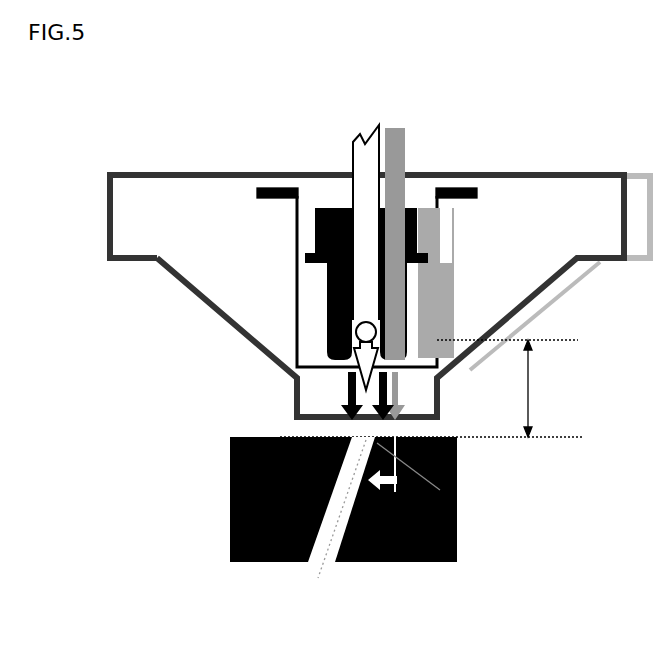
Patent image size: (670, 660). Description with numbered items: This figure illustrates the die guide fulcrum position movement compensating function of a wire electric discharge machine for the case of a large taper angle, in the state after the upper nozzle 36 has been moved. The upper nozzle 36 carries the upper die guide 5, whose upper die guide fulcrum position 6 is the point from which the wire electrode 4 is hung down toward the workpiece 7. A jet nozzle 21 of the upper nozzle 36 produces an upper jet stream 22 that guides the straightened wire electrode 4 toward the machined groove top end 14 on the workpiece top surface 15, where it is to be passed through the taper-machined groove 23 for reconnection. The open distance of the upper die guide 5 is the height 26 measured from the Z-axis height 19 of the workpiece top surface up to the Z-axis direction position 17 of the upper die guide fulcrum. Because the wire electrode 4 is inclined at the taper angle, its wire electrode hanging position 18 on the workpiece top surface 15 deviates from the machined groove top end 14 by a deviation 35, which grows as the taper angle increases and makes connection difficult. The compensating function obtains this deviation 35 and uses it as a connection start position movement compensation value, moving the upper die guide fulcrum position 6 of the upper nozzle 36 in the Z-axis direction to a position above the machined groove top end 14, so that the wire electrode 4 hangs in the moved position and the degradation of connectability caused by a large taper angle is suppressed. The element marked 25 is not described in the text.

The wire electrode 4 is at (360, 140).
The upper die guide 5 is at (325, 297).
The upper die guide fulcrum position 6 is at (327, 340).
The workpiece 7 is at (229, 511).
The machined groove top end 14 is at (354, 439).
The workpiece top surface 15 is at (258, 437).
The Z-axis direction position (height) of the upper die guide fulcrum 17 is at (524, 329).
The wire electrode hanging position 18 is at (398, 440).
The Z-axis height of the workpiece top surface 19 is at (453, 451).
The jet nozzle 21 is at (297, 222).
The upper jet stream 22 is at (348, 394).
The taper-machined groove 23 is at (345, 548).
The cutting direction 25 is at (398, 481).
The height from the workpiece top surface to the upper die guide fulcrum position 26 is at (554, 388).
The deviation 35 is at (440, 490).
The upper nozzle 36 is at (568, 173).